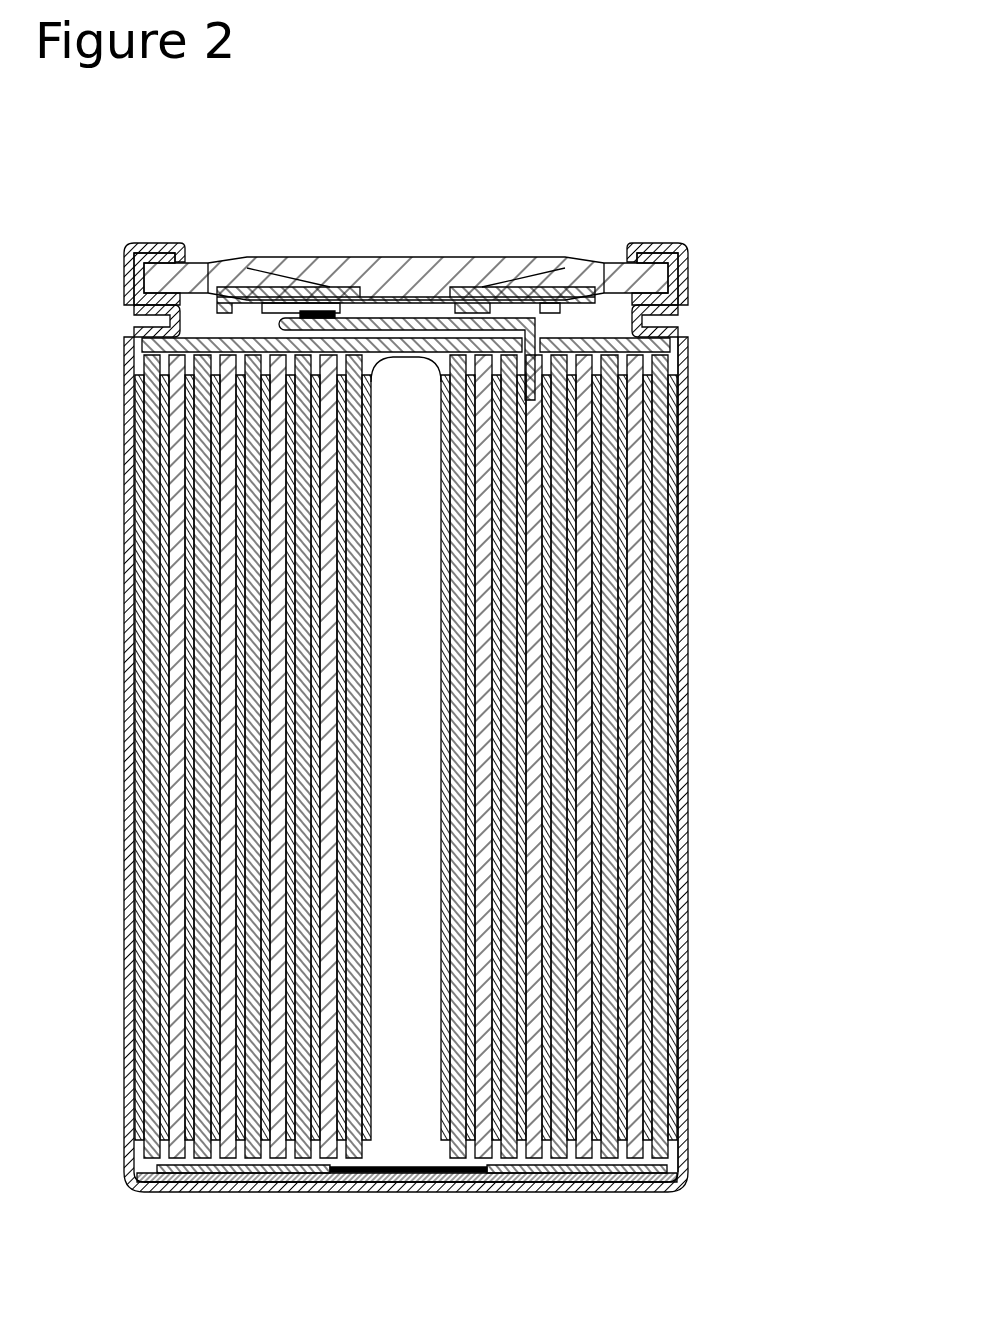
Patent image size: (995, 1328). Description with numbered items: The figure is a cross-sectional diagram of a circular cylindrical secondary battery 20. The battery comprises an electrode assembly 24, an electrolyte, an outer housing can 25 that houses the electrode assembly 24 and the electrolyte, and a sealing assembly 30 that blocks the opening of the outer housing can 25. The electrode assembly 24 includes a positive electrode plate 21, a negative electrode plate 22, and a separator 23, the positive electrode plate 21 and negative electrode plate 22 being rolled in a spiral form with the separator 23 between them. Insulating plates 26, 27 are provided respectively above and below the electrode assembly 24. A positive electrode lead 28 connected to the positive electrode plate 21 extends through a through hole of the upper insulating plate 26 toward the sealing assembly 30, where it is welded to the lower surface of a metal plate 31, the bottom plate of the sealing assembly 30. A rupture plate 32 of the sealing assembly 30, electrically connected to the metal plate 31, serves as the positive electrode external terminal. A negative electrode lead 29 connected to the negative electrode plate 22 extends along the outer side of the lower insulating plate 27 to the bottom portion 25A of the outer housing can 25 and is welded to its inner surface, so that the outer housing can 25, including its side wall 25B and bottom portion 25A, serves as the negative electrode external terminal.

The secondary battery 20 is at (709, 206).
The positive electrode plate 21 is at (633, 647).
The negative electrode plate 22 is at (658, 683).
The separator 23 is at (647, 718).
The electrode assembly 24 is at (741, 624).
The outer housing can 25 is at (690, 426).
The bottom portion 25A is at (488, 1192).
The side wall of battery can 25B is at (690, 462).
The insulating plate 26 is at (135, 342).
The insulating plate 27 is at (690, 1168).
The positive electrode lead 28 is at (398, 318).
The negative electrode lead 29 is at (391, 1192).
The sealing assembly 30 is at (553, 229).
The metal plate 31 is at (241, 292).
The rupture plate 32 is at (655, 278).